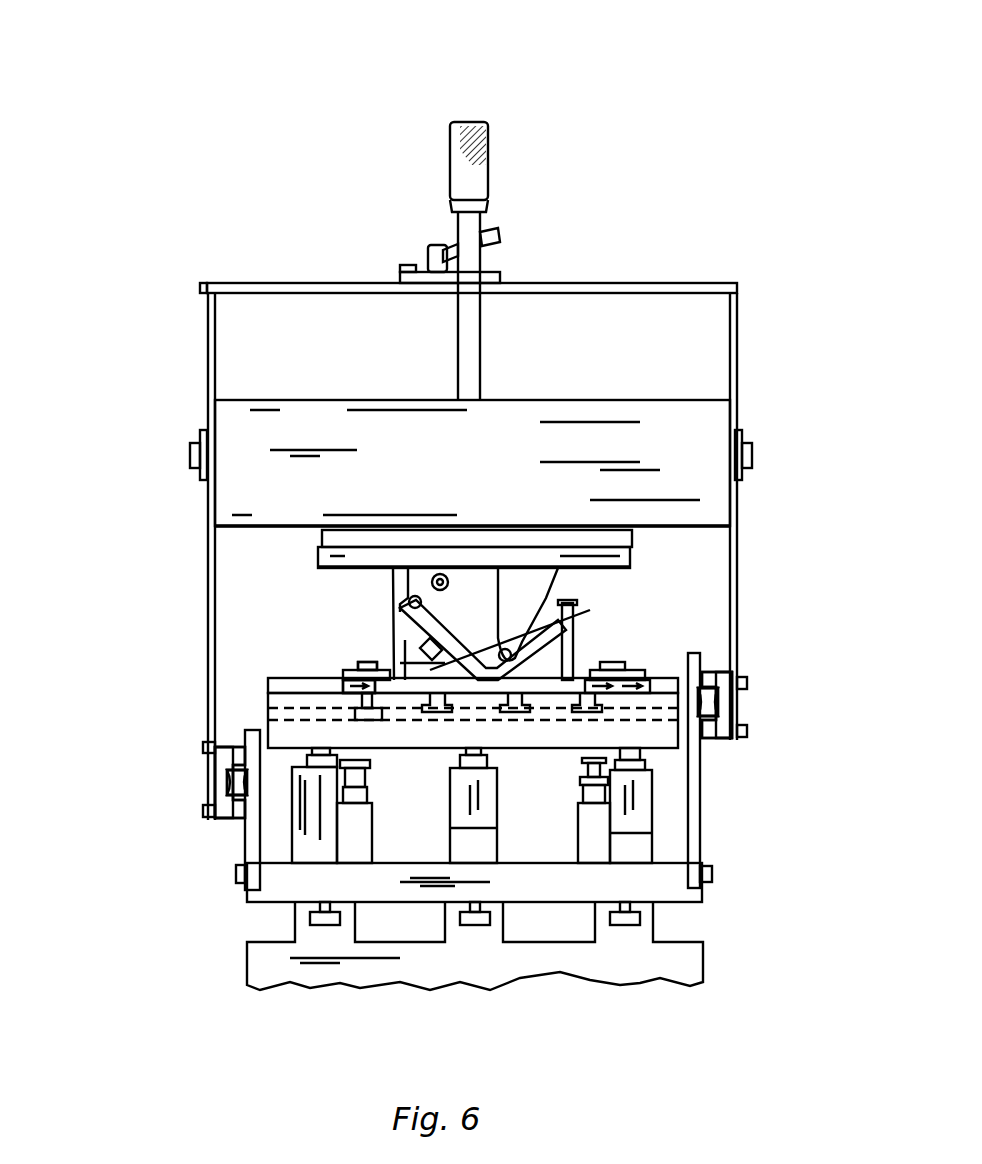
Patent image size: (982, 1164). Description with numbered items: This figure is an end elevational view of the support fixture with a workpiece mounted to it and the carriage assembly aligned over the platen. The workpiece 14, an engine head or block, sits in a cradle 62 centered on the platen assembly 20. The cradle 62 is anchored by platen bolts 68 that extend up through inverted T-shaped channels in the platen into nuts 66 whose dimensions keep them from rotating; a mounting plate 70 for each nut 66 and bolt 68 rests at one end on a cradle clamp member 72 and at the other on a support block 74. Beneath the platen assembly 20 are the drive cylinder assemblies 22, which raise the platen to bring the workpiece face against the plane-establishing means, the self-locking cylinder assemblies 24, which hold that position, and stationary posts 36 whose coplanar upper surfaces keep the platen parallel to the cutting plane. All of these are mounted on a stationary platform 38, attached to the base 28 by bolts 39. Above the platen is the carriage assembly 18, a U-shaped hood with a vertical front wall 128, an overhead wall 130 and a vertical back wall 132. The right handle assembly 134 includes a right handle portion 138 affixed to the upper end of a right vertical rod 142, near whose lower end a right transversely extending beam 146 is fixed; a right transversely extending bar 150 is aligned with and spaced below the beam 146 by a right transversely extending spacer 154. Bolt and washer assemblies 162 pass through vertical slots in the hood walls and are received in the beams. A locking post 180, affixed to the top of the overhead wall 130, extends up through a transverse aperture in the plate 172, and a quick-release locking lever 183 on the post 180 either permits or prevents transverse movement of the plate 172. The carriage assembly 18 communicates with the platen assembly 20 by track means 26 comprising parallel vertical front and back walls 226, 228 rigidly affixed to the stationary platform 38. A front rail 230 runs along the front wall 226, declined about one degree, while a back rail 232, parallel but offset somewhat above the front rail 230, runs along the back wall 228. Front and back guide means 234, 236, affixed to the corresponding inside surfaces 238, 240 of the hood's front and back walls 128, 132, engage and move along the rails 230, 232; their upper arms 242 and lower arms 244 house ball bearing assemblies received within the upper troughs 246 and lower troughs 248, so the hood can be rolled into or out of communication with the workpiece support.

The workpiece 14 is at (423, 555).
The carriage assembly 18 is at (283, 278).
The platen assembly 20 is at (258, 688).
The drive cylinder assemblies 22 is at (494, 825).
The self-locking cylinder assemblies 24 is at (628, 815).
The track means 26 is at (712, 812).
The base 28 is at (258, 960).
The stationary posts 36 is at (360, 835).
The stationary platform 38 is at (684, 872).
The bolts 39 is at (322, 928).
The cradle 62 is at (545, 622).
The nuts 66 is at (377, 724).
The platen bolts 68 is at (368, 665).
The mounting plate 70 is at (347, 690).
The cradle clamp member 72 is at (395, 578).
The support block 74 is at (340, 700).
The vertical front wall 128 is at (207, 310).
The overhead wall 130 is at (660, 282).
The vertical back wall 132 is at (737, 310).
The right handle assembly 134 is at (464, 206).
The right handle portion 138 is at (463, 160).
The right vertical rod 142 is at (470, 228).
The right transversely extending beam 146 is at (562, 430).
The right transversely extending bar 150 is at (600, 555).
The right transversely extending spacer 154 is at (388, 545).
The bolt and washer assemblies 162 is at (190, 455).
The plate 172 is at (480, 270).
The locking post 180 is at (440, 270).
The quick-release locking lever 183 is at (456, 247).
The front wall of track means 226 is at (247, 878).
The back wall of track means 228 is at (700, 875).
The front rail 230 is at (232, 782).
The back rail 232 is at (720, 702).
The front guide means 234 is at (213, 800).
The back guide means 236 is at (736, 728).
The inside surface of front wall 238 is at (215, 592).
The inside surface of back wall 240 is at (730, 548).
The upper arms 242 is at (215, 752).
The lower arms 244 is at (208, 812).
The upper troughs 246 is at (230, 770).
The lower troughs 248 is at (240, 800).